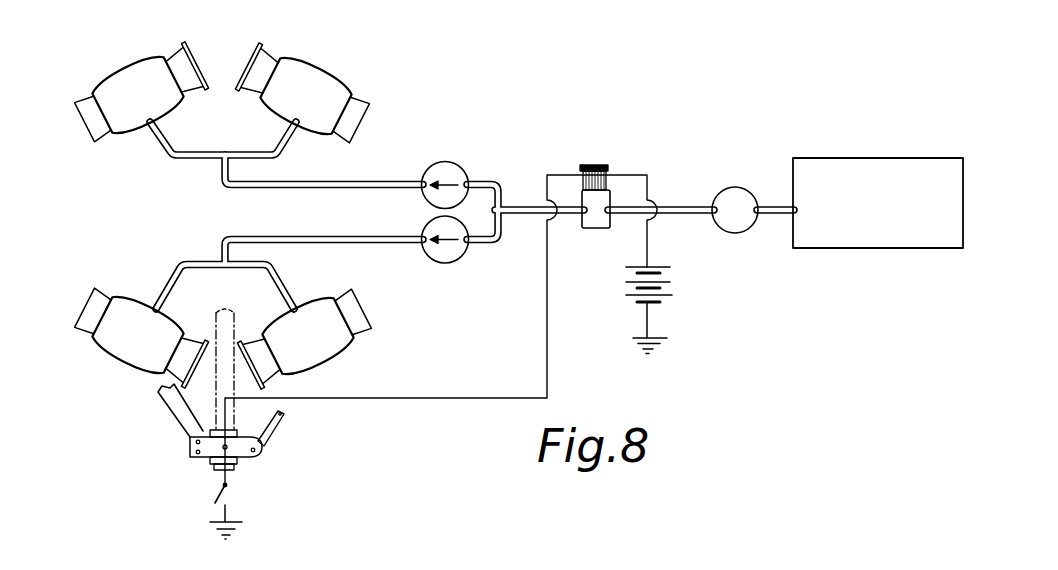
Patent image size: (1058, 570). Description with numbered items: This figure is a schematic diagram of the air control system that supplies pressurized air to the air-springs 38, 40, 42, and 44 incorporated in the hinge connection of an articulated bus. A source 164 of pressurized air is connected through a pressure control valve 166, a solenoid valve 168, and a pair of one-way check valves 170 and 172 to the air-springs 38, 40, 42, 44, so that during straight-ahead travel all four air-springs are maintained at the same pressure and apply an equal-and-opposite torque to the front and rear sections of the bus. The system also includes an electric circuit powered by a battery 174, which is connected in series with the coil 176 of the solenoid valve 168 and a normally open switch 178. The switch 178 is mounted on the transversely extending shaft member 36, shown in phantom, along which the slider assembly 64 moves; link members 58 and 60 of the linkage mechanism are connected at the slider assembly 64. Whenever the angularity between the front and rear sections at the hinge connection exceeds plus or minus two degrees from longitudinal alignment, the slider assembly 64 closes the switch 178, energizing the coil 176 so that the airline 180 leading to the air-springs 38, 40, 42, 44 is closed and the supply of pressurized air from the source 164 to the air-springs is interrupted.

The shaft member 36 is at (236, 320).
The air-spring 38 is at (118, 75).
The air-spring 40 is at (323, 82).
The air-spring 42 is at (135, 360).
The air-spring 44 is at (332, 353).
The link member 58 is at (180, 425).
The link member 60 is at (280, 424).
The slider assembly 64 is at (203, 465).
The source of pressurized air 164 is at (890, 246).
The pressure control valve 166 is at (740, 227).
The solenoid valve 168 is at (602, 222).
The one-way check valve 170 is at (442, 162).
The one-way check valve 172 is at (430, 258).
The battery 174 is at (663, 295).
The coil 176 is at (585, 178).
The switch 178 is at (220, 494).
The airline 180 is at (678, 206).